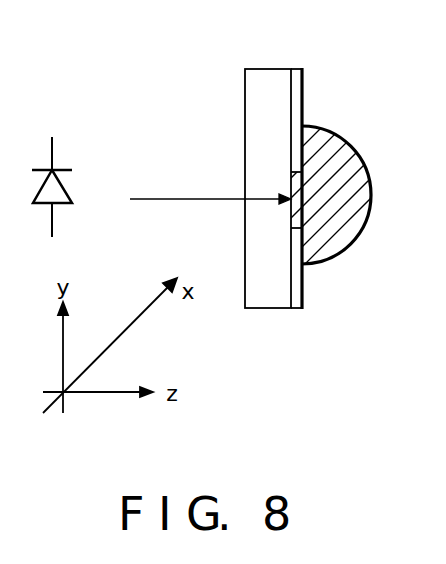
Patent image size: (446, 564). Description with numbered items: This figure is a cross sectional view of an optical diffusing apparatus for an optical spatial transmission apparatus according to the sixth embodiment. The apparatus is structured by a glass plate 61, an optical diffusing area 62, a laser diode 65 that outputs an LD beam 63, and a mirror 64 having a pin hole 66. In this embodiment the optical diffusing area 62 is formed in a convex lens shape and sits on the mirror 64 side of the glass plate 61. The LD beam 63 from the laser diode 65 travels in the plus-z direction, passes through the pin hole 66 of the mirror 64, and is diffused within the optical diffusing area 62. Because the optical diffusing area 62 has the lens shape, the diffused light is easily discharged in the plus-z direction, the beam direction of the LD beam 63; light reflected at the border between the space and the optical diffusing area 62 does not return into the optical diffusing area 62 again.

The glass plate 61 is at (252, 69).
The optical diffusing area 62 is at (338, 256).
The LD beam 63 is at (145, 199).
The mirror 64 is at (302, 69).
The laser diode 65 is at (50, 137).
The pin hole 66 is at (296, 180).